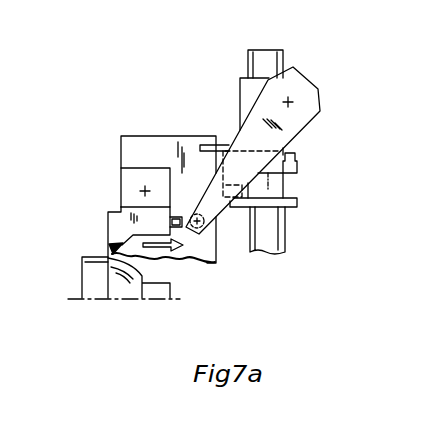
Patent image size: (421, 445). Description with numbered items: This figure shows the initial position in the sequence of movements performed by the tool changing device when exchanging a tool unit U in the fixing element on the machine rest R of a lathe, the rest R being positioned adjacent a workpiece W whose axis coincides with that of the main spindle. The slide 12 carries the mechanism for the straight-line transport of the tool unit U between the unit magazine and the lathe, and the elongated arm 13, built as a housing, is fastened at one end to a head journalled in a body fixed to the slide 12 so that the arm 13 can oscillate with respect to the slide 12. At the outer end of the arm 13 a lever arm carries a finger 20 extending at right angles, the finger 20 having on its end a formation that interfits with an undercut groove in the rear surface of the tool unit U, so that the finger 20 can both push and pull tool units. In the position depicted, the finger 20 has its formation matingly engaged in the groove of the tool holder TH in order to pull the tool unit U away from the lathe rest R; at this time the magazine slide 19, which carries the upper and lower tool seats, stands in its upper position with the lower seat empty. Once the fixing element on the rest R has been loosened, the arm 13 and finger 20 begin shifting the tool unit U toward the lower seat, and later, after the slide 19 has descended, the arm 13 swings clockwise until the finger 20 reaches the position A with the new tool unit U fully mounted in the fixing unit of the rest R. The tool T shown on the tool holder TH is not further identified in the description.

The slide 12 is at (250, 105).
The elongated arm 13 is at (292, 117).
The slide 19 is at (280, 182).
The finger 20 is at (187, 229).
The tool unit U is at (158, 148).
The machine rest R is at (130, 177).
The tool holder TH is at (128, 222).
The tool T is at (107, 246).
The position A is at (179, 205).
The workpiece W is at (122, 290).